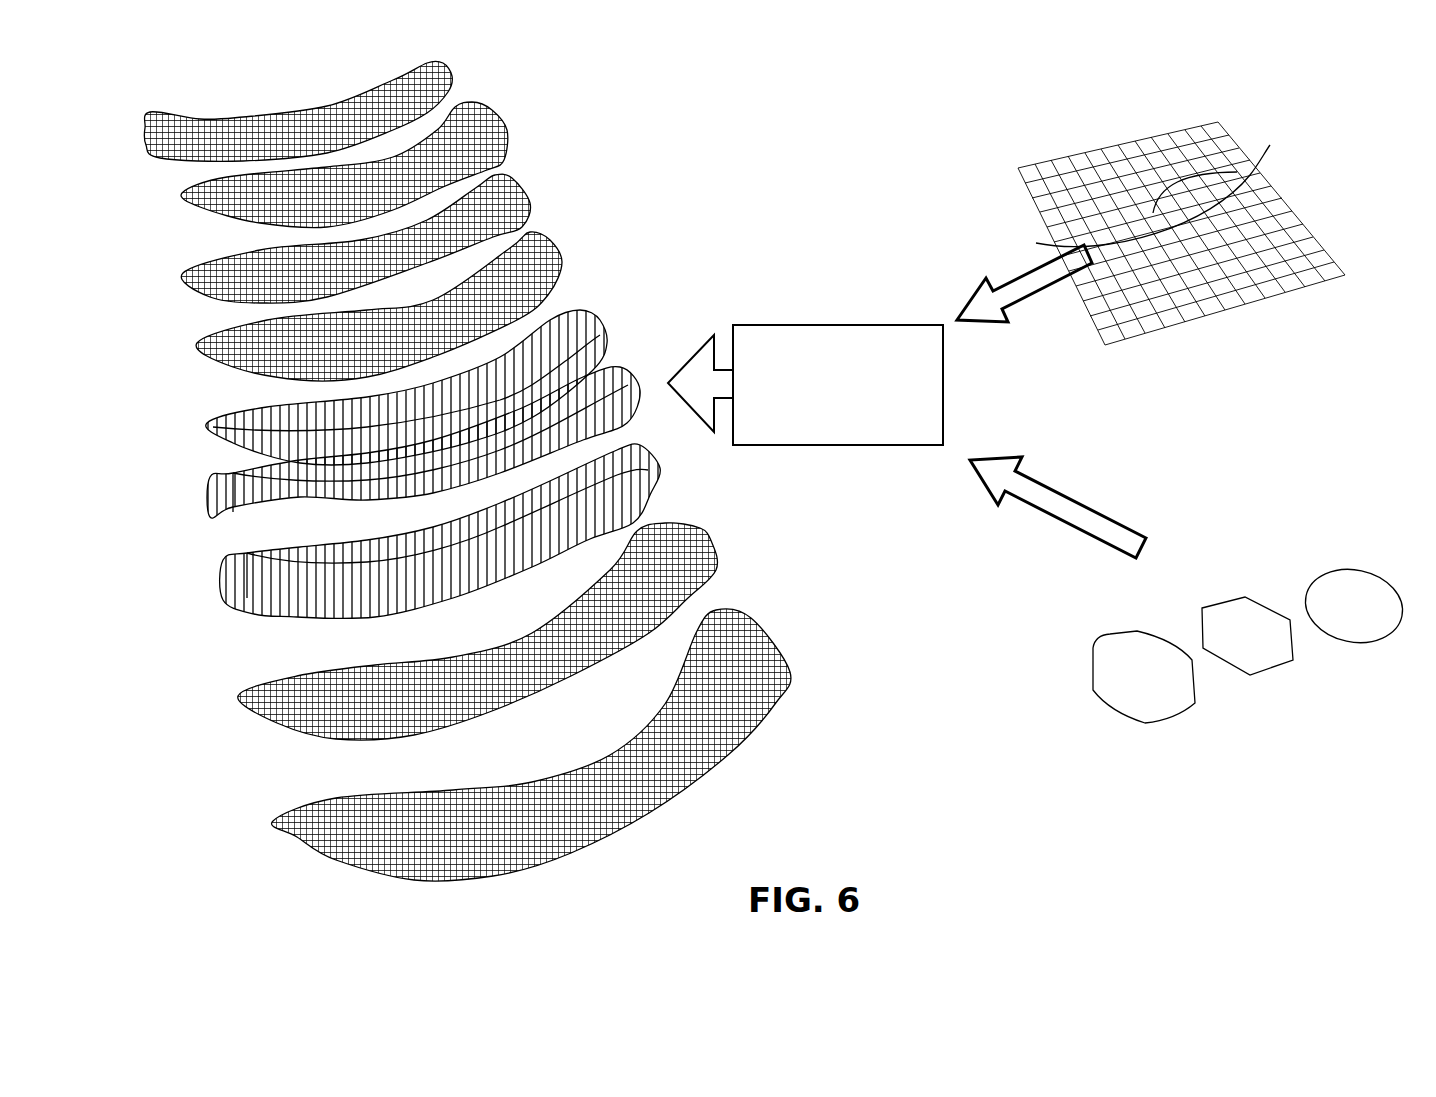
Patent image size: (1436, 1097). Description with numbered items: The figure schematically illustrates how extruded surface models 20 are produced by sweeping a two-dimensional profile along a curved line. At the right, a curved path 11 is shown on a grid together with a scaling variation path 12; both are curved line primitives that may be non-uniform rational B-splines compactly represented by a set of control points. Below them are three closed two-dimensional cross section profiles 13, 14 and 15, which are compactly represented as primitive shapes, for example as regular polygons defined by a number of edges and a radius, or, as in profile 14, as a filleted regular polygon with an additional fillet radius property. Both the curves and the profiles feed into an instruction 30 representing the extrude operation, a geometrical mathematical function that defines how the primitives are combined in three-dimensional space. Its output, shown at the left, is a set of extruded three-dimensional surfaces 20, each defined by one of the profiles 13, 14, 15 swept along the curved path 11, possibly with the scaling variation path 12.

The curved path 11 is at (1278, 147).
The scaling variation path 12 is at (1255, 228).
The 2D cross section profile 13 is at (1155, 740).
The 2D cross section profile 14 is at (1274, 680).
The 2D cross section profile 15 is at (1393, 643).
The extruded 3D surfaces 20 is at (147, 115).
The instructions 30 is at (804, 310).